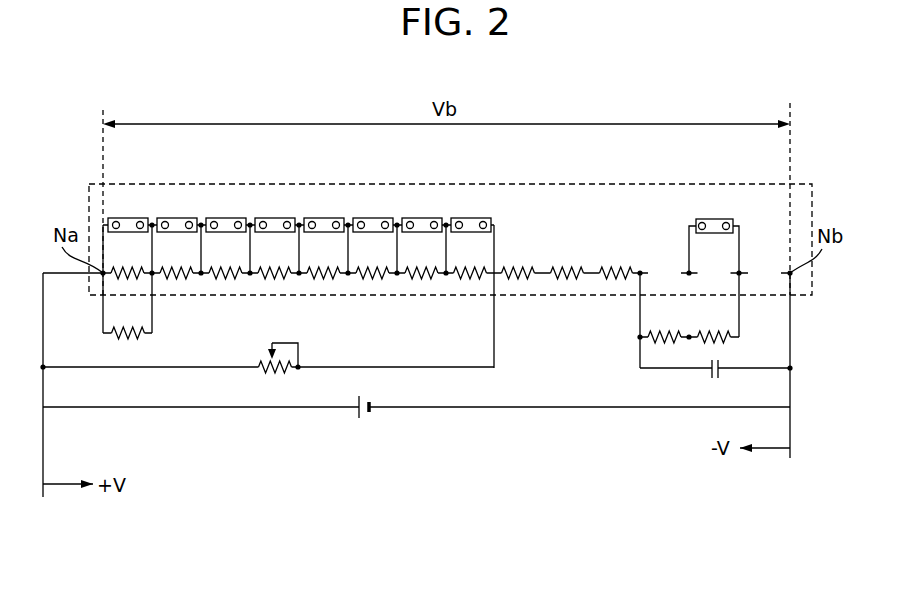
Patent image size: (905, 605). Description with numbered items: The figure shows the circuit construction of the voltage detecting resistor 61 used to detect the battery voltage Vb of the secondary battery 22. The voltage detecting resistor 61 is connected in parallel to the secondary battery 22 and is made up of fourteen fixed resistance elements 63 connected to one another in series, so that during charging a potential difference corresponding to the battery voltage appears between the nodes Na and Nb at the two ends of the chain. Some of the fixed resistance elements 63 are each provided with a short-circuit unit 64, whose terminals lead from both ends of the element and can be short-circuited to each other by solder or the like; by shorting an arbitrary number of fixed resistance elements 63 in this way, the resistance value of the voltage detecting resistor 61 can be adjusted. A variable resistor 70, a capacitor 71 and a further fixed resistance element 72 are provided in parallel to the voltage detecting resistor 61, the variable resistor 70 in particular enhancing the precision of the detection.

The secondary battery 22 is at (363, 422).
The voltage detecting resistor 61 is at (566, 184).
The fixed resistance element 63 is at (562, 267).
The short-circuit unit 64 is at (476, 218).
The variable resistor 70 is at (304, 352).
The capacitor 71 is at (726, 360).
The fixed resistance element 72 is at (665, 339).